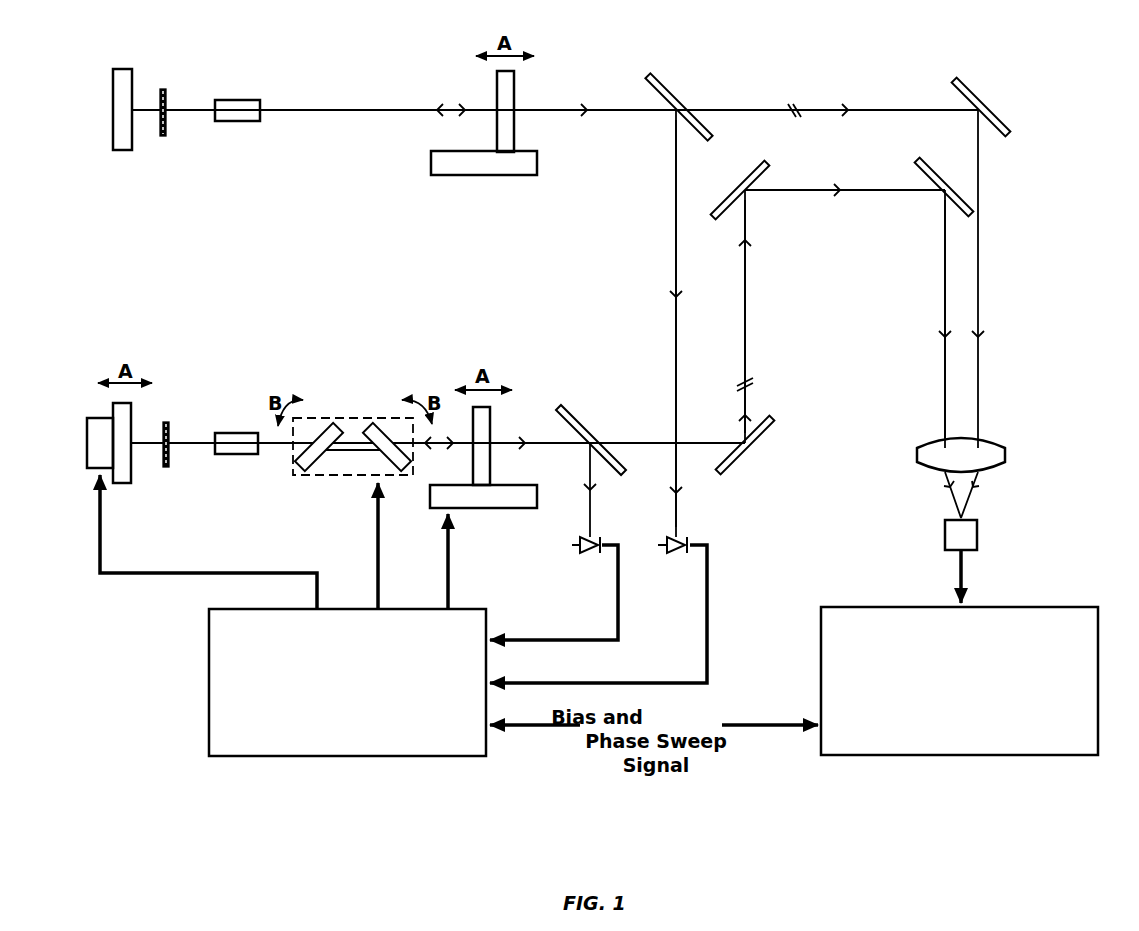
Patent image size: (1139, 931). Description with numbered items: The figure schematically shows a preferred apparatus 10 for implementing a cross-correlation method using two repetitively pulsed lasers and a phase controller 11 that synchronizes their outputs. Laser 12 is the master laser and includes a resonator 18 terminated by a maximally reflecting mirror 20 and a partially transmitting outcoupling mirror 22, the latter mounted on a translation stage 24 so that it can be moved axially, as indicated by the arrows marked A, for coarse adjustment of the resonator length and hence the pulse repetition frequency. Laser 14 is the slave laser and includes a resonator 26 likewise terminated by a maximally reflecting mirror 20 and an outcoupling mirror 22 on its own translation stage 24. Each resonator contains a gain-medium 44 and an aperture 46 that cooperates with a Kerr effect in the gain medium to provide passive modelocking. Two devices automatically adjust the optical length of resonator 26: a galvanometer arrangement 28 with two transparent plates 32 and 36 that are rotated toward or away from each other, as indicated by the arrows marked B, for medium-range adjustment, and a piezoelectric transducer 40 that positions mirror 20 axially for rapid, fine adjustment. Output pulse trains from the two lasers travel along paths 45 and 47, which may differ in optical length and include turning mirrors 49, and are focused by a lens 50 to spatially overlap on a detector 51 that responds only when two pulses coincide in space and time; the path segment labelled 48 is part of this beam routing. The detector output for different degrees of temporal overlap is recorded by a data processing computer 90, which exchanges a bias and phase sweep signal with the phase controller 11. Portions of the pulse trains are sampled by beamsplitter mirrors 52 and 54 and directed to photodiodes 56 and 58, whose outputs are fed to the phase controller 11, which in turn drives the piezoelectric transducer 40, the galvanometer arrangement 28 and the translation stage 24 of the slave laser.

The apparatus 10 is at (762, 806).
The phase controller 11 is at (356, 757).
The master laser 12 is at (326, 209).
The slave laser 14 is at (222, 320).
The resonator 18 is at (340, 94).
The maximally reflecting mirror 20 is at (122, 135).
The partially transmitting mirror 22 is at (509, 128).
The translation stage 24 is at (495, 167).
The resonator 26 is at (241, 483).
The galvanometer arrangement 28 is at (326, 482).
The transparent plate 32 is at (328, 425).
The transparent plate 36 is at (375, 425).
The piezoelectric transducer 40 is at (90, 462).
The gain-medium 44 is at (243, 118).
The path 45 is at (713, 110).
The aperture 46 is at (165, 127).
The path 47 is at (658, 440).
The beam path 48 is at (769, 316).
The turning mirror 49 is at (730, 190).
The lens 50 is at (985, 445).
The detector 51 is at (975, 535).
The beamsplitter mirror 52 is at (670, 97).
The beamsplitter mirror 54 is at (577, 418).
The photodetector 56 is at (692, 528).
The photodetector 58 is at (587, 562).
The data processing computer 90 is at (958, 757).